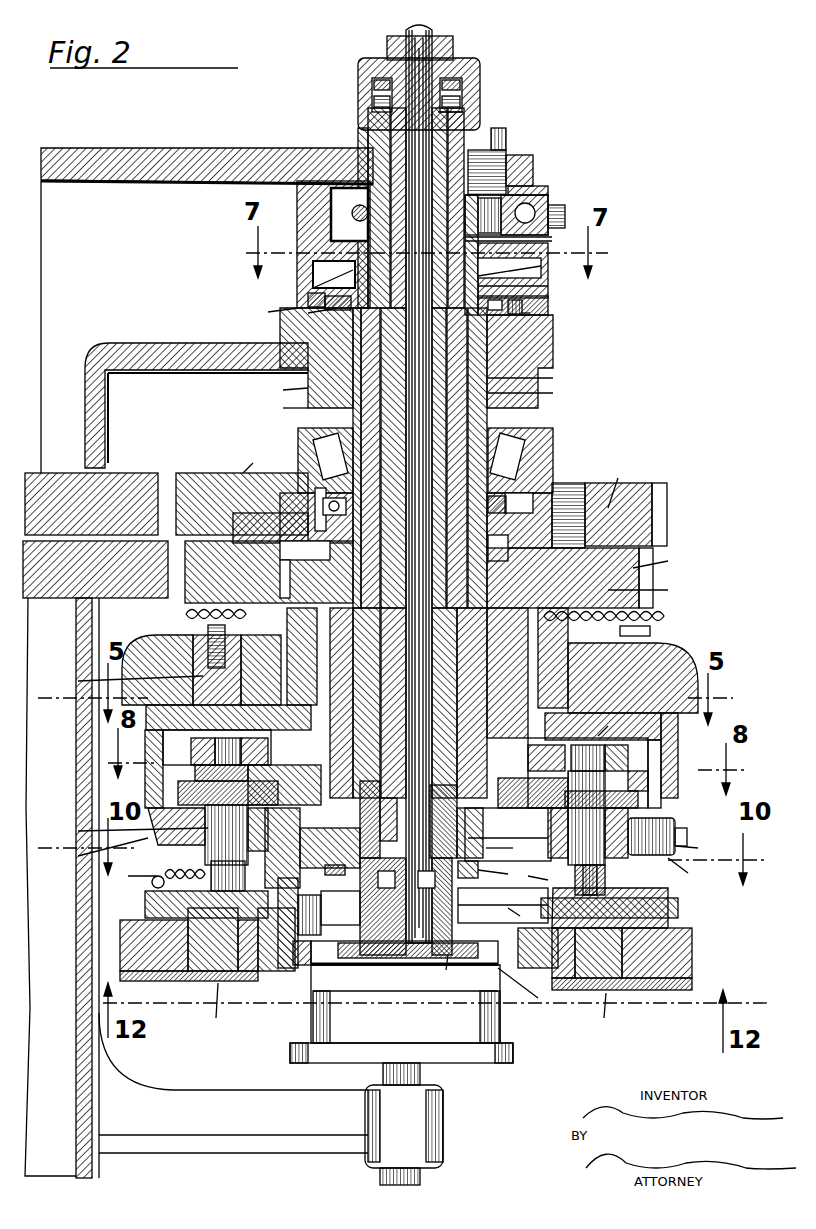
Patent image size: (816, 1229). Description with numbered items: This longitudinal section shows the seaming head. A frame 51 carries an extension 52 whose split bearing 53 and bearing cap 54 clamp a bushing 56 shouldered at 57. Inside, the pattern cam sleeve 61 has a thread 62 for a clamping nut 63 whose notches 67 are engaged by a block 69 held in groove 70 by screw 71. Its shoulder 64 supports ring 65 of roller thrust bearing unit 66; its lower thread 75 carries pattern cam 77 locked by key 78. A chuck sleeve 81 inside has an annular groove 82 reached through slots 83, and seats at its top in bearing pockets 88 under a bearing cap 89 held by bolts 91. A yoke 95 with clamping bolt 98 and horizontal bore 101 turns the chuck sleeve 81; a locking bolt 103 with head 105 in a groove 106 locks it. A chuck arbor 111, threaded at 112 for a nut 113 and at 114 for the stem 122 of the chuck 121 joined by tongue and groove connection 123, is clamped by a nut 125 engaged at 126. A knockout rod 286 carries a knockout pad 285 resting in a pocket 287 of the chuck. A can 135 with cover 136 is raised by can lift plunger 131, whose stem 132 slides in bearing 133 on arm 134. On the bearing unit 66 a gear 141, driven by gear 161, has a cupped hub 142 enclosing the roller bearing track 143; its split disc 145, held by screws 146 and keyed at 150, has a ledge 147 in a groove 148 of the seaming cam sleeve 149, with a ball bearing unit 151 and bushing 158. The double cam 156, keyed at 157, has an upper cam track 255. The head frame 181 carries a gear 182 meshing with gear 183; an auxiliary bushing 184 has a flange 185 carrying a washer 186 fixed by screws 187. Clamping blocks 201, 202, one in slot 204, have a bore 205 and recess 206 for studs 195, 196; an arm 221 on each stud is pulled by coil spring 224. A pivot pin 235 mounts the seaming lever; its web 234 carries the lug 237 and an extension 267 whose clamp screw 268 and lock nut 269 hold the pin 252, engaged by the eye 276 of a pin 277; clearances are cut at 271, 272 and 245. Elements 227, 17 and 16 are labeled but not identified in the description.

The spindle shaft 286 is at (426, 24).
The cap 125 is at (352, 54).
The nut 112 is at (455, 76).
The lock nut 113 is at (455, 92).
The washer 111 is at (456, 108).
The cap flange 126 is at (349, 108).
The sleeve 81 is at (445, 130).
The screw 103 is at (500, 130).
The top plate 52 is at (160, 140).
The housing 88 is at (345, 148).
The ball 98 is at (344, 206).
The bracket 91 is at (548, 200).
The block 95 is at (525, 188).
The boss 101 is at (526, 168).
The ring 89 is at (526, 150).
The screw 106 is at (556, 225).
The plate 105 is at (540, 236).
The collar 83 is at (540, 276).
The key 71 is at (530, 298).
The pin 69 is at (530, 308).
The slot 70 is at (530, 320).
The housing section 56 is at (530, 352).
The bearing race 54 is at (536, 370).
The ring 61 is at (536, 385).
The housing section 57 is at (280, 318).
The lip 63 is at (275, 312).
The seal 62 is at (300, 290).
The washer 82 is at (305, 278).
The flange 67 is at (268, 310).
The housing wall 53 is at (280, 382).
The shoulder 143 is at (278, 400).
The bearing 65 is at (290, 430).
The seal ring 64 is at (317, 492).
The bearing 66 is at (530, 425).
The seal ring 142 is at (530, 440).
The plate 161 is at (120, 470).
The flange 147 is at (235, 510).
The recess 151 is at (238, 465).
The frame plate 183 is at (55, 597).
The hub 148 is at (269, 572).
The bolt 146 is at (560, 476).
The plate 141 is at (620, 480).
The hole 145 is at (620, 476).
The hub 150 is at (570, 578).
The plate edge 182 is at (665, 560).
The plate 184 is at (652, 589).
The spring 205 is at (175, 605).
The spring 224 is at (660, 606).
The spring seat 221 is at (640, 622).
The drum 201 is at (140, 630).
The screw 227 is at (217, 622).
The drum wall 195 is at (124, 679).
The drum 181 is at (600, 650).
The sleeve 149 is at (478, 642).
The cavity 187 is at (250, 720).
The cavity 158 is at (588, 761).
The wall 185 is at (611, 725).
The bolt 235 is at (240, 820).
The nut 255 is at (187, 765).
The pin 237 is at (138, 788).
The bolt 157 is at (612, 790).
The nut 156 is at (630, 790).
The block 186 is at (640, 770).
The knob 268 is at (680, 825).
The stem 269 is at (701, 845).
The shoulder 267 is at (692, 869).
The sleeve 271 is at (600, 856).
The nut 276 is at (598, 880).
The lever 252 is at (124, 829).
The arm 234 is at (94, 849).
The spring 277 is at (118, 868).
The base block 202 is at (118, 905).
The pad 206 is at (160, 974).
The block 245 is at (270, 970).
The base 196 is at (410, 1008).
The bracket 272 is at (660, 905).
The key 17 is at (350, 815).
The collar 123 is at (508, 834).
The pin 77 is at (509, 847).
The ring 75 is at (498, 875).
The ring 78 is at (541, 879).
The sleeve 16 is at (319, 916).
The collar 114 is at (503, 892).
The washer 122 is at (518, 915).
The nut 285 is at (410, 947).
The washer 287 is at (355, 945).
The ring 121 is at (320, 957).
The lock washer 136 is at (450, 971).
The plate 204 is at (520, 988).
The cup 135 is at (405, 1004).
The flange 131 is at (505, 1048).
The stub shaft 132 is at (415, 1063).
The coupling 133 is at (435, 1108).
The arm 134 is at (233, 1083).
The housing 51 is at (97, 410).